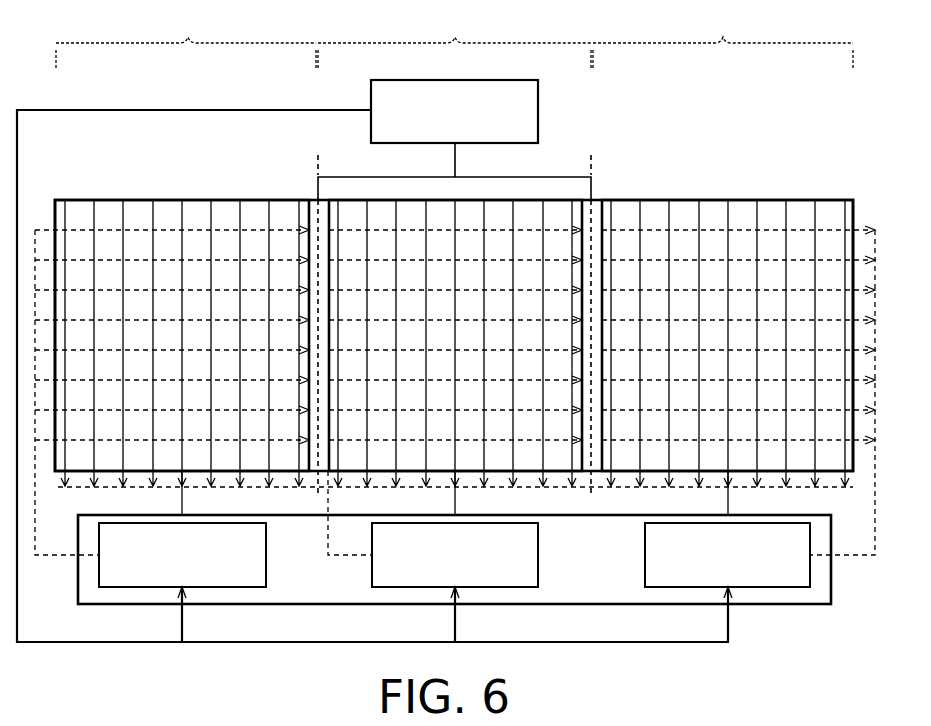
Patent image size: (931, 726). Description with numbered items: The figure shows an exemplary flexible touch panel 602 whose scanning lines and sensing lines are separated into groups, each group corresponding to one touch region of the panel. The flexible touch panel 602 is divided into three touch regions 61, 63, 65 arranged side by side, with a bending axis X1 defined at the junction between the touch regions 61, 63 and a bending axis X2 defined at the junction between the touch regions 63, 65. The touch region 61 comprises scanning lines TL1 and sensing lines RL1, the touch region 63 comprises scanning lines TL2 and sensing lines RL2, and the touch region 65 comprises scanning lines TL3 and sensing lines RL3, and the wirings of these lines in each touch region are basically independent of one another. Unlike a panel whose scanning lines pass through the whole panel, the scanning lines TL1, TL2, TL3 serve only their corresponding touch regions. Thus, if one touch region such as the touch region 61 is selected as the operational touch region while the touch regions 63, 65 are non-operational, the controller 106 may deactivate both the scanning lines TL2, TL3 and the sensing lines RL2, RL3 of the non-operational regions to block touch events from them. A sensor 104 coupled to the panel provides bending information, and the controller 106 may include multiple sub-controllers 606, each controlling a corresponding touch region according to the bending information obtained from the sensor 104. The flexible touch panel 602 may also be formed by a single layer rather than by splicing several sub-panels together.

The touch region 61 is at (185, 241).
The touch region 63 is at (454, 241).
The touch region 65 is at (723, 241).
The flexible touch panel 602 is at (178, 197).
The sensor 104 is at (540, 112).
The controller 106 is at (763, 598).
The sub-controller 606 is at (140, 588).
The bending axis X1 is at (318, 316).
The bending axis X2 is at (591, 316).
The sensing lines RL1 is at (185, 503).
The sensing lines RL2 is at (458, 503).
The sensing lines RL3 is at (731, 503).
The scanning lines TL1 is at (51, 558).
The scanning lines TL2 is at (337, 558).
The scanning lines TL3 is at (857, 558).